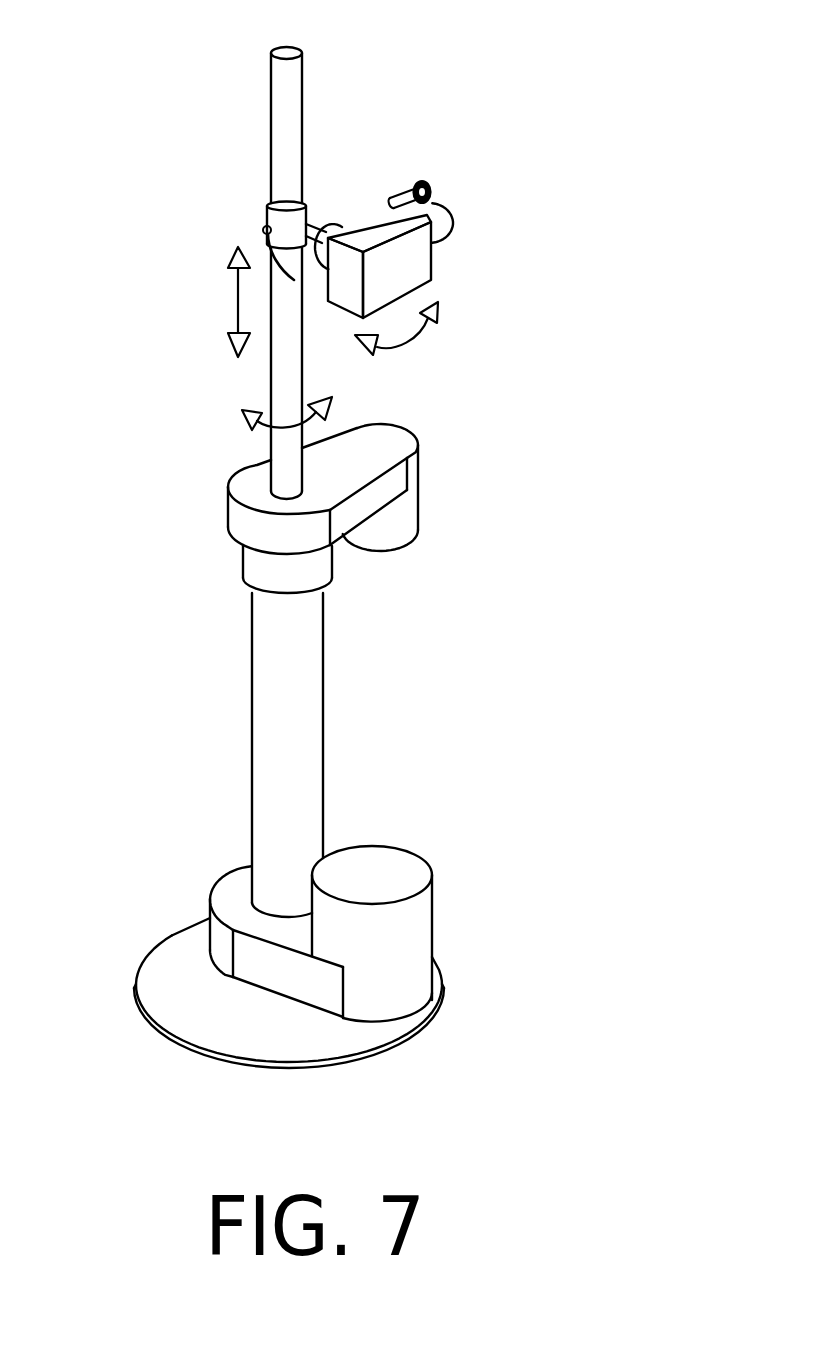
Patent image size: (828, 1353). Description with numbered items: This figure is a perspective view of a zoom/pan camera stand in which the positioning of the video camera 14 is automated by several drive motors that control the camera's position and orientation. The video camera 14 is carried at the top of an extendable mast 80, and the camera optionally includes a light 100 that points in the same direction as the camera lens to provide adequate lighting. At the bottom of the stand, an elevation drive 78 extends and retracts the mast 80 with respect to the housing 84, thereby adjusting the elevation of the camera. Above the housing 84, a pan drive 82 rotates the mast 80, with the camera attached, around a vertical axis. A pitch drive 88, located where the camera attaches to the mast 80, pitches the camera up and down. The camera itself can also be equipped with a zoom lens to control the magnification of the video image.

The mast 80 is at (288, 128).
The pitch drive 88 is at (342, 223).
The light 100 is at (430, 193).
The video camera 14 is at (393, 260).
The pan drive 82 is at (357, 455).
The housing 84 is at (295, 758).
The elevation drive 78 is at (392, 957).